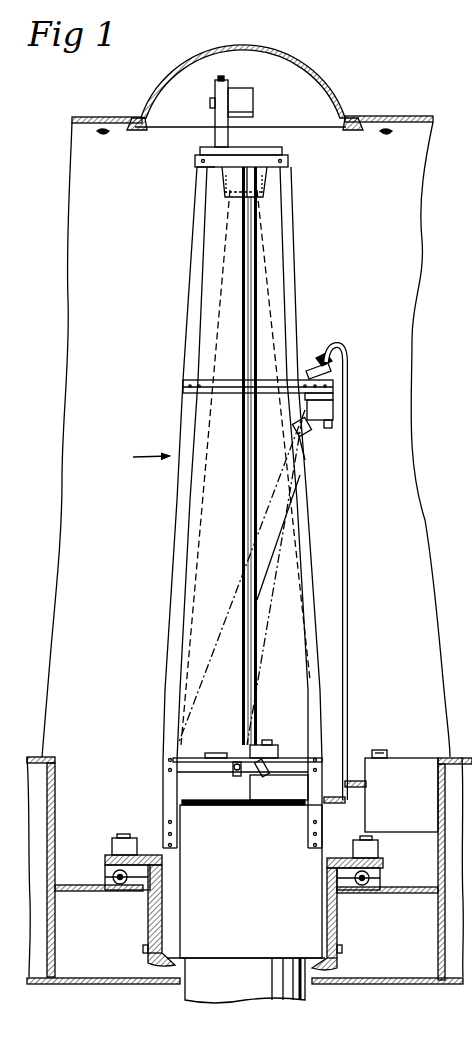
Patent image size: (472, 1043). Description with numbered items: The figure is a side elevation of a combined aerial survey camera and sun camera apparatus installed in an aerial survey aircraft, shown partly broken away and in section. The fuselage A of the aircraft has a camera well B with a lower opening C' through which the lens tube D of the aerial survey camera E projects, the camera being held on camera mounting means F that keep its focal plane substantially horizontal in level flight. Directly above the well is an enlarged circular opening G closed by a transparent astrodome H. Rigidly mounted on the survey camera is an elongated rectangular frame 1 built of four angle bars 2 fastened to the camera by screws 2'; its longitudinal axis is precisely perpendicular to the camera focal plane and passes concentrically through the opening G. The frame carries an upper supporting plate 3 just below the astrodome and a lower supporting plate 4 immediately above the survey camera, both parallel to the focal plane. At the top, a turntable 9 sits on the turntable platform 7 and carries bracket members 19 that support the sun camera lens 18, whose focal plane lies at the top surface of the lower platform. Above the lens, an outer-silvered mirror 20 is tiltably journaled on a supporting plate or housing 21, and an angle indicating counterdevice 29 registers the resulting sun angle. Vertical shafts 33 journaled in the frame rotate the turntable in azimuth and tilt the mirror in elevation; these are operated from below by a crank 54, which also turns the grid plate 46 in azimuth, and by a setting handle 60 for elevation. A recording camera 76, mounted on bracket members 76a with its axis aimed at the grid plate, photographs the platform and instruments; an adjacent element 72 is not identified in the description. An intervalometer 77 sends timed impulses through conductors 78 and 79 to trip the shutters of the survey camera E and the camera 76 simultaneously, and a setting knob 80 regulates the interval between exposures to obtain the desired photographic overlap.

The elongated rectangular frame 1 is at (150, 614).
The angle bars 2 is at (239, 507).
The screws 2' is at (245, 834).
The upper supporting plate 3 is at (202, 165).
The lower supporting plate 4 is at (190, 763).
The turntable platform 7 is at (283, 155).
The turntable 9 is at (266, 148).
The sun camera lens 18 is at (224, 195).
The bracket members 19 is at (266, 183).
The mirror 20 is at (253, 101).
The supporting plate or housing 21 is at (216, 133).
The angle indicating counterdevice 29 is at (225, 80).
The azimuth and elevation adjustment shafts 33 is at (268, 696).
The grid plate 46 is at (225, 752).
The operating handle or crank 54 is at (237, 776).
The setting handle 60 is at (266, 776).
The bearing 72 is at (295, 430).
The camera 76 is at (334, 414).
The bracket members 76a is at (183, 386).
The intervalometer 77 is at (398, 831).
The circuit conductor 78 is at (325, 811).
The circuit conductor 79 is at (348, 720).
The setting knob 80 is at (386, 750).
The fuselage A is at (112, 118).
The camera well B is at (55, 802).
The lower opening C' is at (336, 998).
The lens tube D is at (200, 990).
The aerial survey camera E is at (175, 910).
The camera mounting means F is at (105, 873).
The circular opening G is at (172, 105).
The astrodome H is at (174, 64).